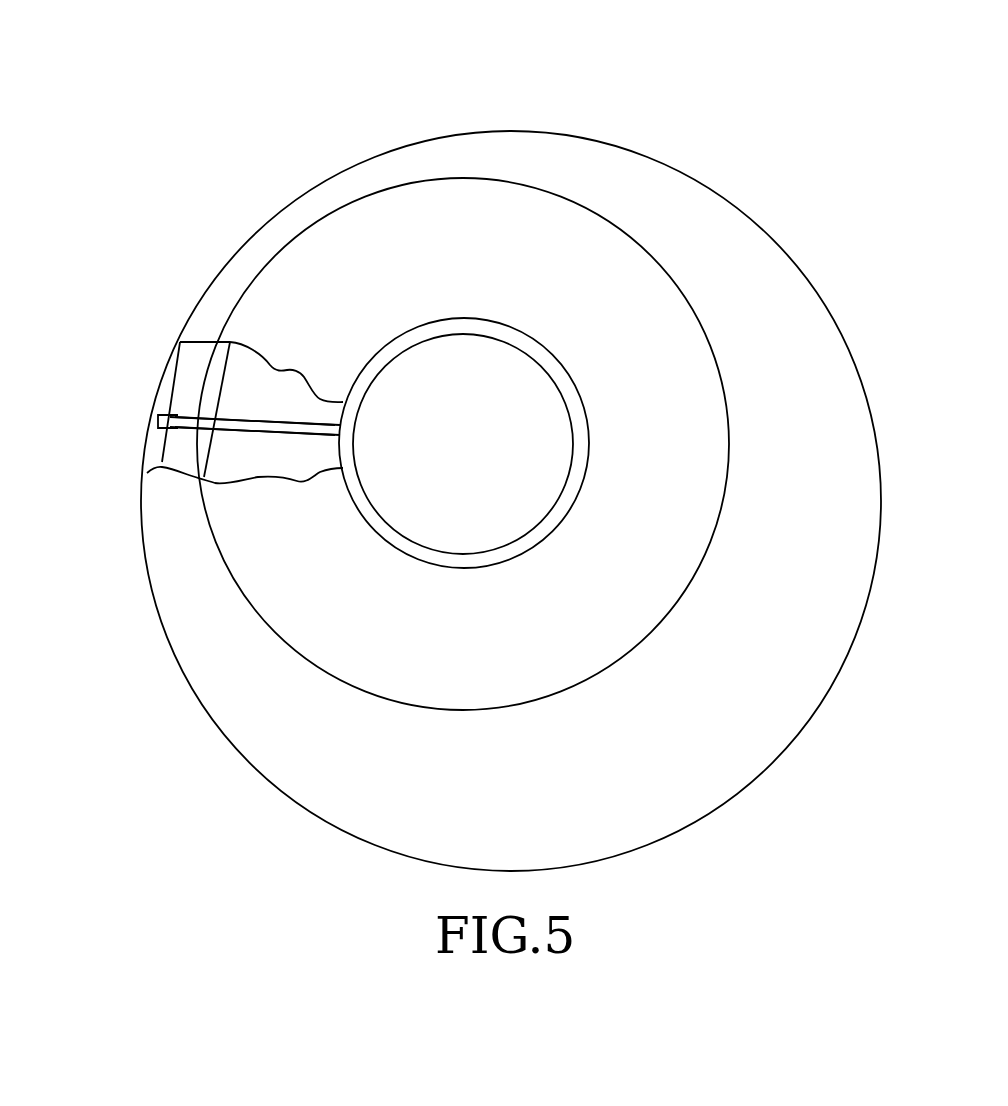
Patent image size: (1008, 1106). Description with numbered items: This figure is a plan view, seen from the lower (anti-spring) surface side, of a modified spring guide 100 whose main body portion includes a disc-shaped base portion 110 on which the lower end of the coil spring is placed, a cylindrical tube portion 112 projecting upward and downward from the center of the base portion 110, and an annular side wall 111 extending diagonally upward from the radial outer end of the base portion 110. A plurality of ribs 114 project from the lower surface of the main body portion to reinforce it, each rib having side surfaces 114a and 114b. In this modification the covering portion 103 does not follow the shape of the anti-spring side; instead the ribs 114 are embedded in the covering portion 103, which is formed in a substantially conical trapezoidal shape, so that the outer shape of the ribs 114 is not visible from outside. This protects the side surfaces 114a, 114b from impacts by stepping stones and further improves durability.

The spring guide 100 is at (280, 100).
The covering portion 103 is at (710, 242).
The base portion 110 is at (223, 455).
The side wall 111 is at (200, 375).
The tube portion 112 is at (505, 340).
The ribs 114 is at (158, 415).
The side surface of rib 114a is at (226, 419).
The side surface of rib 114b is at (225, 430).